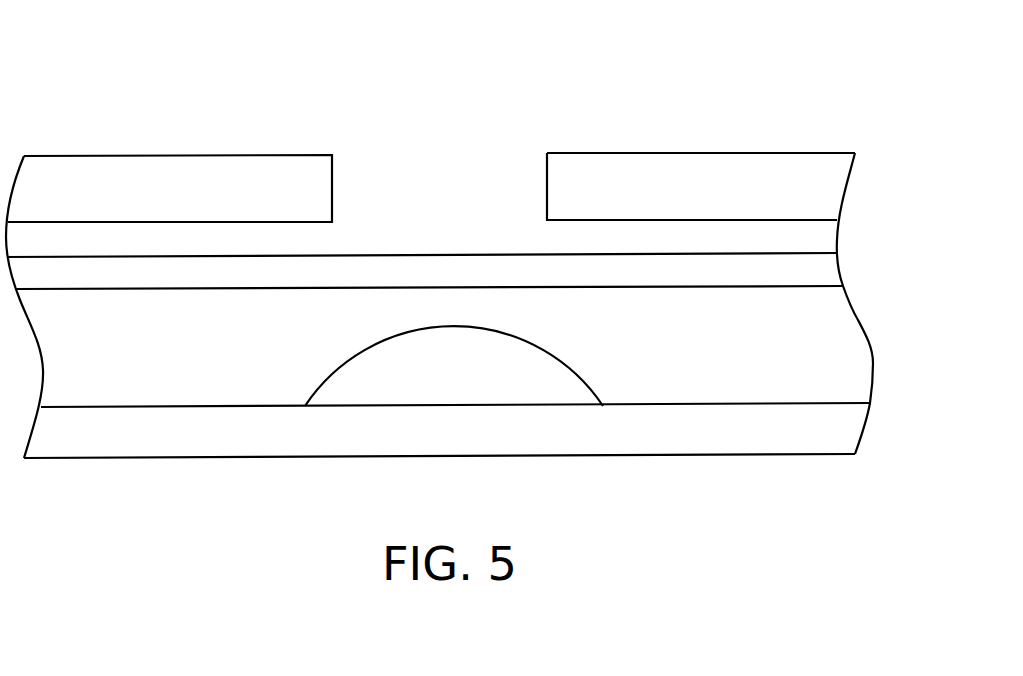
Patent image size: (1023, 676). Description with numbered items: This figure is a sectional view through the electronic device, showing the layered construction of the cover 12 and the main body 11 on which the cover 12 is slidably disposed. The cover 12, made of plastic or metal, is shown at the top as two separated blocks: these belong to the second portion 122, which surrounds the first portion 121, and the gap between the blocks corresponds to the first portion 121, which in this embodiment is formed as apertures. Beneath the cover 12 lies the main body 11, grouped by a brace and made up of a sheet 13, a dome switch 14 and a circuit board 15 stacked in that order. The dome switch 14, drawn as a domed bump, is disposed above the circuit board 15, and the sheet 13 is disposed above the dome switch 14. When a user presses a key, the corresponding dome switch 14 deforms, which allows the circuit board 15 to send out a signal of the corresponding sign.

The main body 11 is at (504, 355).
The cover 12 is at (431, 123).
The first portion 121 is at (455, 210).
The second portion 122 is at (701, 149).
The sheet 13 is at (826, 270).
The dome switch 14 is at (508, 353).
The circuit board 15 is at (487, 438).